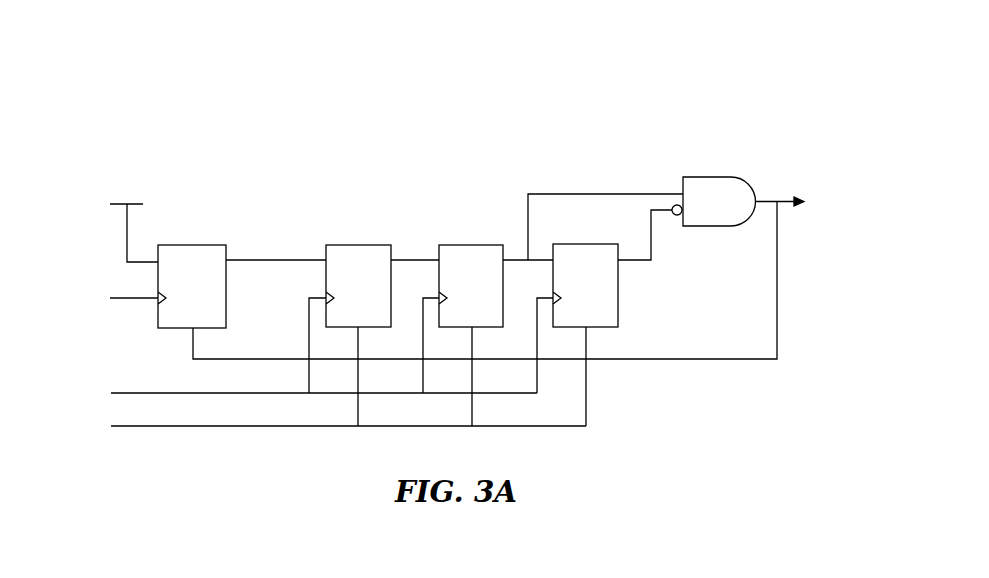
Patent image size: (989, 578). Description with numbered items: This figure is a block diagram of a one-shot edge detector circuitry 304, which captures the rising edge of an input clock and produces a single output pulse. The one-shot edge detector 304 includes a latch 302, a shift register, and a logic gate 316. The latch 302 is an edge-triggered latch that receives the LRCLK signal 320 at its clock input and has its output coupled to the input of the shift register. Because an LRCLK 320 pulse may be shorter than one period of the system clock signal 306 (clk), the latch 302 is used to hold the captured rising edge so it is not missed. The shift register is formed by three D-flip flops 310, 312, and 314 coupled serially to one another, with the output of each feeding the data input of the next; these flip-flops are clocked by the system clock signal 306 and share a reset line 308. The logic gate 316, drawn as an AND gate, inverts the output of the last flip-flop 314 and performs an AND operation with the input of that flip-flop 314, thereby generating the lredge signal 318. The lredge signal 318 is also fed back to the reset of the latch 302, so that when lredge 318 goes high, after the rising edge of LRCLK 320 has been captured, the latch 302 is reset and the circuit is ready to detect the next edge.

The latch 302 is at (226, 244).
The one-shot edge detector circuitry 304 is at (191, 116).
The system clock signal 306 is at (302, 350).
The reset signal 308 is at (310, 381).
The D-flip flop 310 is at (390, 244).
The D-flip flop 312 is at (503, 244).
The D-flip flop 314 is at (604, 243).
The logic gate 316 is at (716, 177).
The lredge signal 318 is at (526, 271).
The LRCLK signal 320 is at (102, 298).